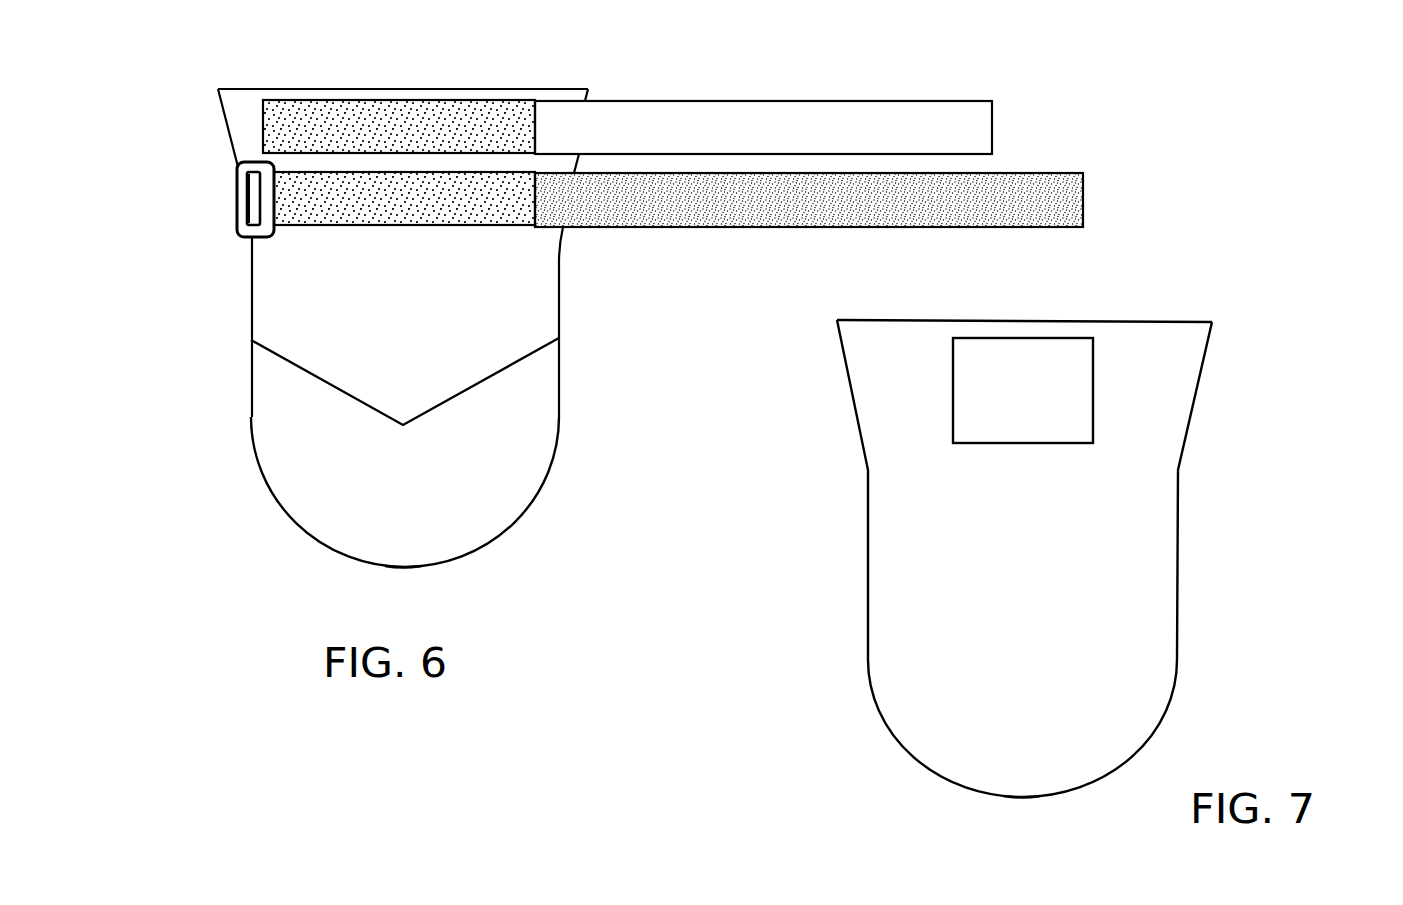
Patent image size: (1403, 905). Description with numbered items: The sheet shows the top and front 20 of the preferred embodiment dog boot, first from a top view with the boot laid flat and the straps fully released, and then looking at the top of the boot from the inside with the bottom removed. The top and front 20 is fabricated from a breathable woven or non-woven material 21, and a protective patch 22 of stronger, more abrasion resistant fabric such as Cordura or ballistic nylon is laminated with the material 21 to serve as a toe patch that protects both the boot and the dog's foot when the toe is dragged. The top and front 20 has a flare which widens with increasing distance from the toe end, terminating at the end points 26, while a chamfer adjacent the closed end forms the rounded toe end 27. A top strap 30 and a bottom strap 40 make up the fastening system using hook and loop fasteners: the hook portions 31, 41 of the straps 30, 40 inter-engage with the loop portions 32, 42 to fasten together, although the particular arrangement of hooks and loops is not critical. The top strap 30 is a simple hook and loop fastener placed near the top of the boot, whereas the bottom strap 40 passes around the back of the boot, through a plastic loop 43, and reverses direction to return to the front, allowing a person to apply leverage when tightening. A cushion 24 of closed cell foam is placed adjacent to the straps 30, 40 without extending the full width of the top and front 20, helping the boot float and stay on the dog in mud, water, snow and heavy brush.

In FIG. 6, the boot top 20 is at (428, 328).
In FIG. 6, the material 21 is at (446, 309).
In FIG. 7, the material 21 is at (1041, 588).
In FIG. 6, the protective patch 22 is at (446, 487).
In FIG. 7, the cushion 24 is at (1041, 399).
In FIG. 6, the end points 26 is at (218, 89).
In FIG. 7, the end points 26 is at (837, 320).
In FIG. 6, the rounded toe end 27 is at (400, 567).
In FIG. 7, the rounded toe end 27 is at (1016, 797).
In FIG. 6, the top strap 30 is at (637, 104).
In FIG. 6, the hook portion 31 is at (410, 105).
In FIG. 6, the loop portion 32 is at (782, 144).
In FIG. 6, the bottom strap 40 is at (689, 199).
In FIG. 6, the hook portion 41 is at (388, 215).
In FIG. 6, the loop portion 42 is at (742, 217).
In FIG. 6, the plastic loop 43 is at (238, 187).